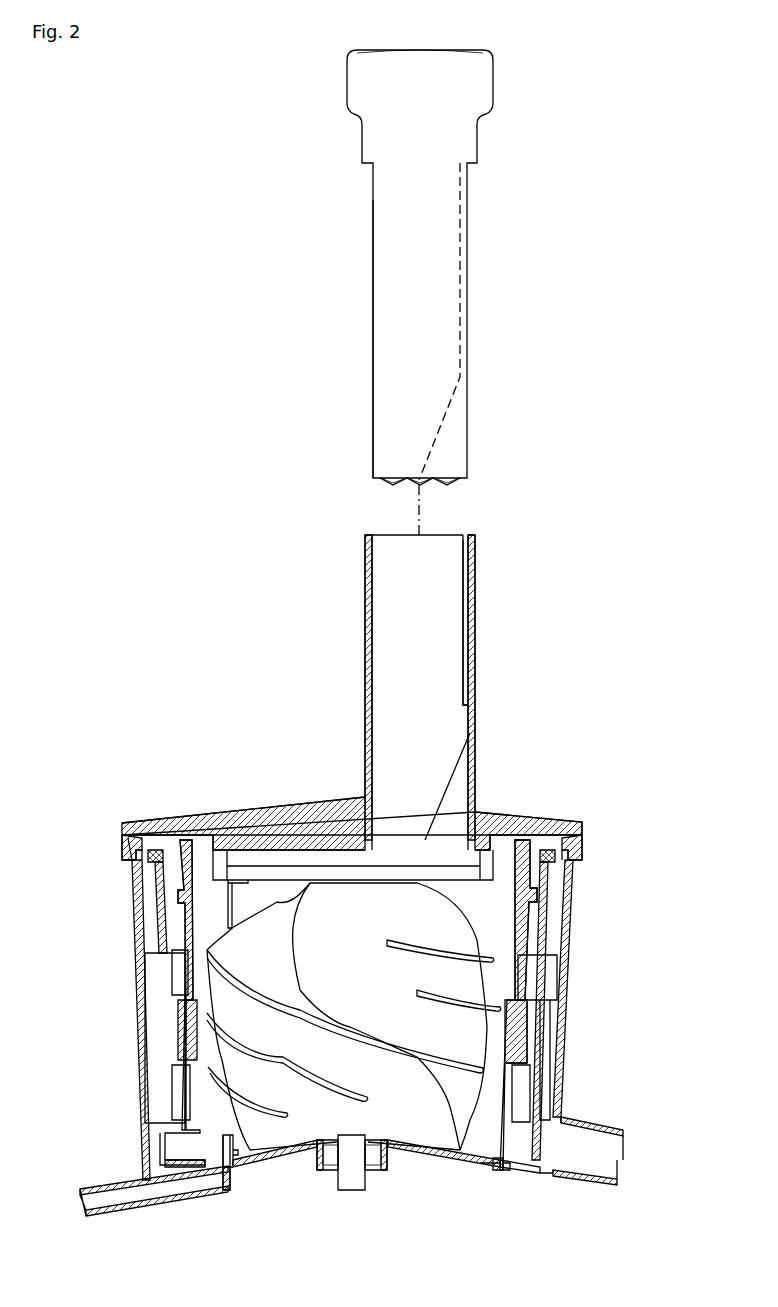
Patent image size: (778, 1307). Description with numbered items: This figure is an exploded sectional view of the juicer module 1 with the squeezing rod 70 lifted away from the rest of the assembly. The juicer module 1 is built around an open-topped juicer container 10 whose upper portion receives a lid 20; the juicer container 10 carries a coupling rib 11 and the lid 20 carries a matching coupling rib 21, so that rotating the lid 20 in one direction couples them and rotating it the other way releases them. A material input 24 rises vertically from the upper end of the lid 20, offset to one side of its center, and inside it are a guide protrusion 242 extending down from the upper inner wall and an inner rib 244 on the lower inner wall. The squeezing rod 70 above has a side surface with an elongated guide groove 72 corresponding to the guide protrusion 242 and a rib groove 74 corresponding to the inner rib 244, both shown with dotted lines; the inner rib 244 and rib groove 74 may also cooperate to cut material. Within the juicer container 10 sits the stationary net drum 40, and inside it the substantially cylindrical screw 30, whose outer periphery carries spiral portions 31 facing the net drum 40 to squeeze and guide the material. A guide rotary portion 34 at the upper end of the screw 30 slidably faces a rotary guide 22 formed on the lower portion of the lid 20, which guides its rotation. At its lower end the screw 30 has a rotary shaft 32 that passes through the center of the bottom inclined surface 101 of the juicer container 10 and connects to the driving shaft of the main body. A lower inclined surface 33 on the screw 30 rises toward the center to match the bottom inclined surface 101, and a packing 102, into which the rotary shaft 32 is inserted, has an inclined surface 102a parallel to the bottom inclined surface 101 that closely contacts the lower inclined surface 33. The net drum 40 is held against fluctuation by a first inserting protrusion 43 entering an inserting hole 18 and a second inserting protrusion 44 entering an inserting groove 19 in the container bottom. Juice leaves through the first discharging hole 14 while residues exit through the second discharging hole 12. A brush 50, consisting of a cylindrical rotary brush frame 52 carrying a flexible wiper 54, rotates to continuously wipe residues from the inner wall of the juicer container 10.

The juicer module 1 is at (632, 336).
The juicer container 10 is at (128, 887).
The coupling rib 11 is at (123, 843).
The second discharging hole 12 is at (614, 1156).
The first discharging hole 14 is at (88, 1205).
The inserting hole 18 is at (240, 1170).
The inserting groove 19 is at (504, 1172).
The lid 20 is at (556, 789).
The coupling rib 21 is at (140, 840).
The rotary guide 22 is at (486, 826).
The material input 24 is at (480, 605).
The guide protrusion 242 is at (472, 665).
The inner rib 244 is at (458, 780).
The screw 30 is at (417, 1016).
The spiral portions 31 is at (468, 968).
The rotary shaft 32 is at (363, 1180).
The lower inclined surface 33 is at (278, 1160).
The guide rotary portion 34 is at (240, 872).
The net drum 40 is at (186, 1131).
The first inserting protrusion 43 is at (228, 1188).
The second inserting protrusion 44 is at (497, 1172).
The brush 50 is at (318, 1005).
The brush frame 52 is at (170, 1152).
The wiper 54 is at (158, 1052).
The squeezing rod 70 is at (487, 90).
The guide groove 72 is at (465, 287).
The rib groove 74 is at (455, 433).
The bottom inclined surface 101 is at (478, 1170).
The packing 102 is at (383, 1155).
The inclined surface 102a is at (326, 1150).